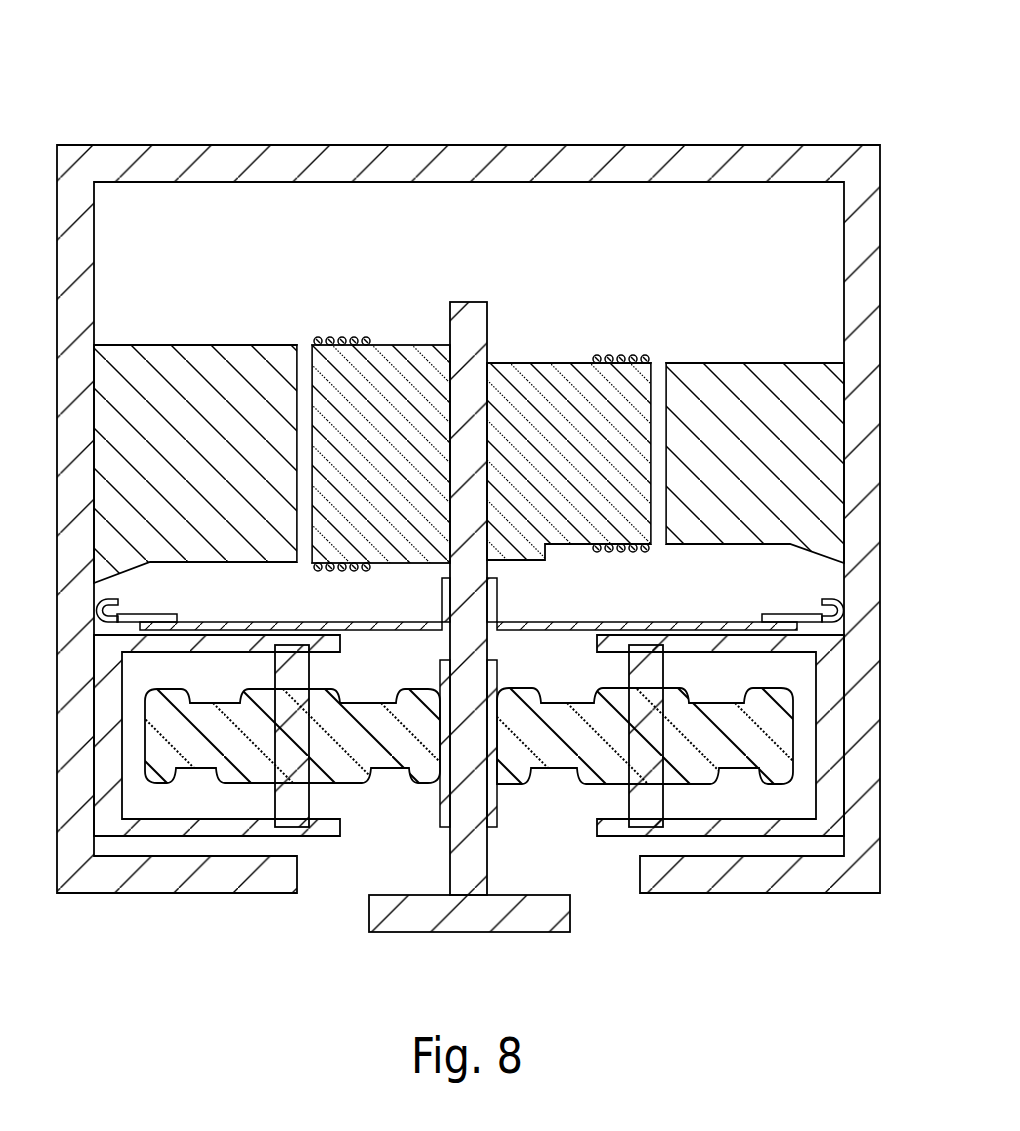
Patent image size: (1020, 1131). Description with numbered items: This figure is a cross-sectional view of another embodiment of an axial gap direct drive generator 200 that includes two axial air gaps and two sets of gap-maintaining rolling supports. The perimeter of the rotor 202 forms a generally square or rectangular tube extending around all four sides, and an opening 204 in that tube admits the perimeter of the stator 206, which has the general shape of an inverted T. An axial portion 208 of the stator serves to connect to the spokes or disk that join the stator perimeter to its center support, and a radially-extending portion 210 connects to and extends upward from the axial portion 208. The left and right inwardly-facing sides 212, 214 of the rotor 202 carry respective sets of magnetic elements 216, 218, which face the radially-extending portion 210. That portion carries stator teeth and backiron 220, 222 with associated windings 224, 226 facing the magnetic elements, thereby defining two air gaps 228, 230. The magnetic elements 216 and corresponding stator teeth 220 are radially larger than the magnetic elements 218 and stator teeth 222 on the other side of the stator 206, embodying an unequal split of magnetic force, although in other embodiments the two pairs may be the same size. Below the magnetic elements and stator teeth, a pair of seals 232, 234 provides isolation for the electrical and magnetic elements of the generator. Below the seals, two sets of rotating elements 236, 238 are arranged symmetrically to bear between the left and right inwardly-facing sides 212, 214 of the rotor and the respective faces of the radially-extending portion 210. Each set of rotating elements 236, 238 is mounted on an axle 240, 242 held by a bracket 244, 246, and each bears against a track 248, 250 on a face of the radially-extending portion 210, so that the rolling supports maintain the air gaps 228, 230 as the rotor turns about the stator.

The axial gap direct drive generator 200 is at (551, 98).
The rotor 202 is at (247, 152).
The opening 204 is at (326, 880).
The stator 206 is at (448, 857).
The axial portion 208 is at (405, 933).
The radially-extending portion 210 is at (472, 302).
The left inwardly-facing side 212 is at (94, 212).
The right inwardly-facing side 214 is at (844, 208).
The magnetic elements 216 is at (147, 345).
The magnetic elements 218 is at (776, 362).
The stator teeth and backiron 220 is at (427, 345).
The stator teeth and backiron 222 is at (527, 362).
The windings 224 is at (342, 337).
The windings 226 is at (621, 355).
The air gap 228 is at (305, 355).
The air gap 230 is at (657, 530).
The seal 232 is at (213, 623).
The seal 234 is at (592, 622).
The rotating elements 236 is at (361, 716).
The rotating elements 238 is at (564, 716).
The axle 240 is at (278, 795).
The axle 242 is at (640, 800).
The bracket 244 is at (340, 832).
The bracket 246 is at (620, 832).
The track 248 is at (445, 664).
The track 250 is at (491, 660).